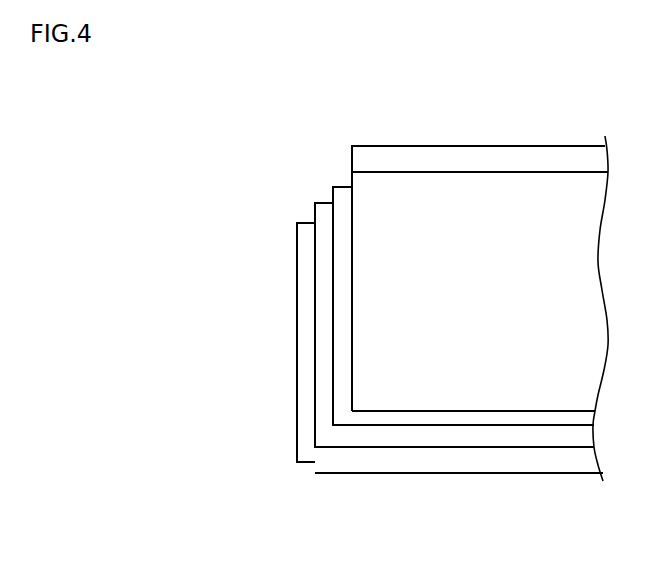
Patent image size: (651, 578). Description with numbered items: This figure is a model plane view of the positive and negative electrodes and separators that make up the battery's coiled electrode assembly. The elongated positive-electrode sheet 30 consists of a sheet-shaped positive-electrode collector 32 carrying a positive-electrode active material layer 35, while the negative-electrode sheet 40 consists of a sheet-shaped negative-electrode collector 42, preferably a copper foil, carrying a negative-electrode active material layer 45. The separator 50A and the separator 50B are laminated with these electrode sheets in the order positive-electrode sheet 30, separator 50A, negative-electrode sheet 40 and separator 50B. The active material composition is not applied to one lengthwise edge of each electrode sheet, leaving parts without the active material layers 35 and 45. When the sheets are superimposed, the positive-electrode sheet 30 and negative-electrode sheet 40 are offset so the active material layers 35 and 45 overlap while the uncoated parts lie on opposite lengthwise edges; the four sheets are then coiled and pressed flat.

The positive-electrode sheet 30 is at (480, 264).
The positive-electrode collector 32 is at (575, 153).
The positive-electrode active material layer 35 is at (395, 193).
The negative-electrode sheet 40 is at (459, 377).
The negative-electrode collector 42 is at (379, 461).
The negative-electrode active material layer 45 is at (528, 438).
The separator 50A is at (342, 179).
The separator 50B is at (305, 215).